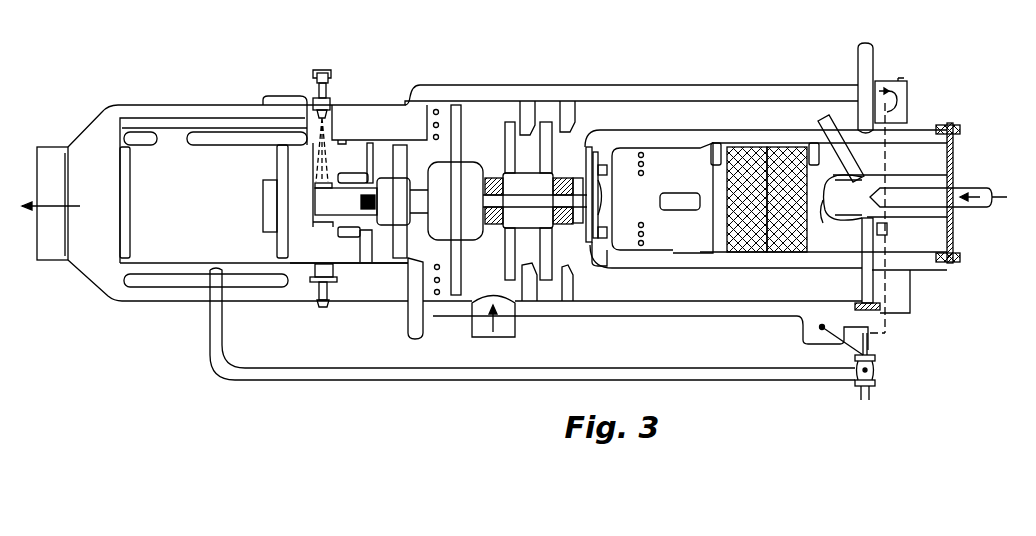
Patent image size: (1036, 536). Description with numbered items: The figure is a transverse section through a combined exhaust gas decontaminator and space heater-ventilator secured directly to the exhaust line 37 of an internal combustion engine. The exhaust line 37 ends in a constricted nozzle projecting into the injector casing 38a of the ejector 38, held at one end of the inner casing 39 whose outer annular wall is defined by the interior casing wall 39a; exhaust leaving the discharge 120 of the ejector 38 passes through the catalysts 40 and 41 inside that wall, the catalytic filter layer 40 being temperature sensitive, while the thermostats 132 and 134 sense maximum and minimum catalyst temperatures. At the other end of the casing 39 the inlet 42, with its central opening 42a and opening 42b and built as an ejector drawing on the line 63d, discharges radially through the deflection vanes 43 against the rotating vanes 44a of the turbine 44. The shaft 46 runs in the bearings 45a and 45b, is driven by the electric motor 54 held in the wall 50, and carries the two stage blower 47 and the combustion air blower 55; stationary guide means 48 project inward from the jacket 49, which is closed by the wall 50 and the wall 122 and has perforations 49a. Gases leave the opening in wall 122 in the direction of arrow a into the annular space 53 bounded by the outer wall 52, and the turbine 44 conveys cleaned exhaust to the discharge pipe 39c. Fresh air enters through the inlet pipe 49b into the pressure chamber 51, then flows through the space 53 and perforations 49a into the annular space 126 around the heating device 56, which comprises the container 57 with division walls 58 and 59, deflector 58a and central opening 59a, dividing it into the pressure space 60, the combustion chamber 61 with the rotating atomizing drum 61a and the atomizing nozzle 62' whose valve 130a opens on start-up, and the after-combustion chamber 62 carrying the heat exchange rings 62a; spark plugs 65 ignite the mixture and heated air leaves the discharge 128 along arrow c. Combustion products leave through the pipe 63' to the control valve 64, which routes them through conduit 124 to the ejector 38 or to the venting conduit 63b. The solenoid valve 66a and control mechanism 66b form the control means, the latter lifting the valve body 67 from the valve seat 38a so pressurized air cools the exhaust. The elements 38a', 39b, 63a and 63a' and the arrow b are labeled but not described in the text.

The exhaust line 37 is at (987, 192).
The ejector 38 is at (913, 182).
The injector casing 38a is at (934, 263).
The strut flange 38a' is at (906, 313).
The inner casing 39 is at (793, 135).
The interior casing wall 39a is at (890, 135).
The air passage wall 39b is at (735, 130).
The discharge pipe 39c is at (868, 63).
The catalyst 40 is at (787, 254).
The catalyst 41 is at (742, 254).
The inlet 42 is at (678, 160).
The central opening 42a is at (682, 207).
The opening 42b is at (611, 190).
The deflection vanes 43 is at (603, 240).
The turbine 44 is at (592, 250).
The rotating vanes 44a is at (600, 270).
The bearing 45a is at (563, 177).
The bearing 45b is at (492, 177).
The shaft 46 is at (526, 196).
The two stage blower 47 is at (505, 235).
The stationary guide means 48 is at (568, 296).
The outer cylindrical casing or jacket 49 is at (440, 301).
The perforations 49a is at (433, 113).
The inlet pipe 49b is at (508, 336).
The wall 50 is at (458, 133).
The pressure chamber 51 is at (481, 110).
The outer wall 52 is at (410, 97).
The annular space 53 is at (765, 92).
The electric motor 54 is at (442, 232).
The combustion air blower 55 is at (388, 212).
The heating device 56 is at (194, 90).
The inner cylindrical container 57 is at (345, 142).
The division wall 58 is at (372, 257).
The deflector 58a is at (350, 236).
The division wall 59 is at (282, 260).
The central opening 59a is at (265, 196).
The pressure space 60 is at (377, 153).
The combustion chamber 61 is at (333, 205).
The rotating atomizing drum 61a is at (308, 125).
The after-combustion chamber 62 is at (264, 202).
The annular heat exchange rings 62a is at (175, 125).
The atomizing nozzle 62' is at (332, 112).
The pipe 63' is at (516, 324).
The fuel valve 63a is at (853, 370).
The fuel nozzle 63a' is at (856, 167).
The conduit 63b is at (862, 393).
The line 63d is at (630, 213).
The control valve 64 is at (872, 383).
The spark plugs 65 is at (320, 293).
The solenoid valve 66a is at (266, 97).
The control mechanism 66b is at (803, 342).
The valve body 67 is at (880, 308).
The discharge 120 is at (828, 220).
The wall 122 is at (910, 87).
The conduit 124 is at (892, 231).
The annular space 126 is at (367, 110).
The discharge 128 is at (40, 226).
The valve of fuel nozzle 130a is at (318, 80).
The maximum temperature thermostat 132 is at (813, 145).
The minimum temperature thermostat 134 is at (715, 144).
The arrow a is at (897, 96).
The air flow b is at (476, 93).
The arrow c is at (59, 206).